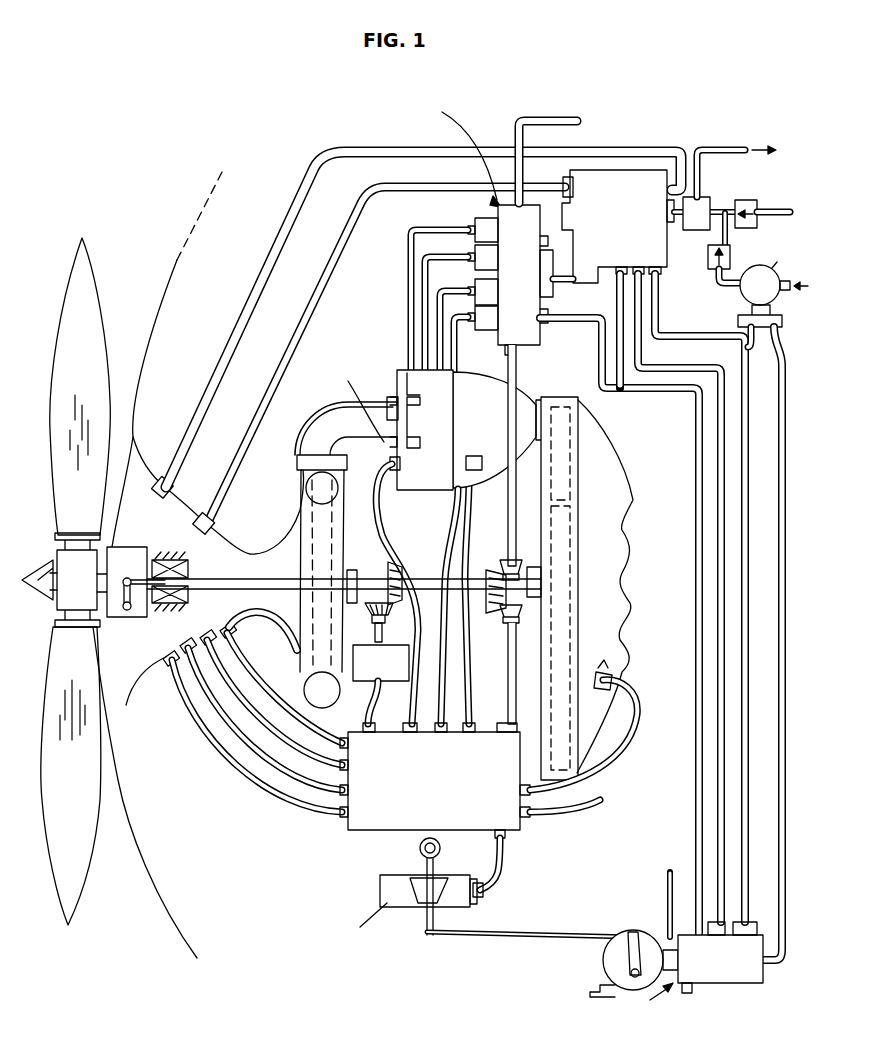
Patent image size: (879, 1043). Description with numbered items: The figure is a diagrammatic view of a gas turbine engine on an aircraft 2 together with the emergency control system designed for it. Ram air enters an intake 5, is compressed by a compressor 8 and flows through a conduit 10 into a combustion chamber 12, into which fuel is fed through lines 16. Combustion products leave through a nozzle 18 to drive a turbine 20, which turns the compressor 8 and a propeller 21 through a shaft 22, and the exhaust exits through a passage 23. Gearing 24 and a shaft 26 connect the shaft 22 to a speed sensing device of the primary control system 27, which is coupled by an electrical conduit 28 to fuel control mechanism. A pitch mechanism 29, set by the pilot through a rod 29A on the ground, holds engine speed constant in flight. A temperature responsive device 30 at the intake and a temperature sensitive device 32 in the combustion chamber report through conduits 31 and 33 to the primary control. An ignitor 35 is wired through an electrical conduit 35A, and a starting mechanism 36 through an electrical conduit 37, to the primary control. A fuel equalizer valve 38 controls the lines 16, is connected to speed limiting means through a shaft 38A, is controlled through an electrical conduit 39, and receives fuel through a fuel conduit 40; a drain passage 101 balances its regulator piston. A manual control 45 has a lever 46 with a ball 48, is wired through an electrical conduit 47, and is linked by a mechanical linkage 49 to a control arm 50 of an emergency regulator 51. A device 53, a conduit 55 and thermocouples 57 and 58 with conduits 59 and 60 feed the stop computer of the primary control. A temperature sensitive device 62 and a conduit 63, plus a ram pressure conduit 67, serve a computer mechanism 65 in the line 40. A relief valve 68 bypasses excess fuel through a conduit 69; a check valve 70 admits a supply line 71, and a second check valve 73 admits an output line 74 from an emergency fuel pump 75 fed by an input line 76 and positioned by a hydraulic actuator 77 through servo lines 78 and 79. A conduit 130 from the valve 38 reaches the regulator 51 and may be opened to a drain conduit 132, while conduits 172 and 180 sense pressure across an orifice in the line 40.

The aircraft 2 is at (155, 838).
The intake 5 is at (137, 497).
The blower or compressor 8 is at (300, 508).
The conduit 10 is at (318, 417).
The combustion chamber 12 is at (467, 377).
The fuel lines 16 is at (452, 318).
The nozzle 18 is at (548, 397).
The turbine 20 is at (566, 447).
The propeller 21 is at (95, 302).
The shaft 22 is at (233, 580).
The passage 23 is at (610, 477).
The gearing 24 is at (496, 613).
The shaft 26 is at (509, 660).
The primary control system 27 is at (447, 826).
The electrical conduit 28 is at (562, 818).
The pitch varying mechanism 29 is at (130, 550).
The rod 29A is at (174, 569).
The temperature responsive device 30 is at (170, 657).
The conduit 31 is at (207, 757).
The temperature sensitive device 32 is at (479, 456).
The conduit 33 is at (447, 535).
The ignitor 35 is at (390, 453).
The electrical conduit 35A is at (404, 531).
The starting mechanism 36 is at (389, 679).
The electrical conduit 37 is at (369, 715).
The fuel equalizer valve 38 is at (528, 276).
The shaft 38A is at (513, 533).
The electrical conduit 39 is at (552, 362).
The fuel conduit 40 is at (563, 281).
The manually operable control 45 is at (372, 888).
The control lever 46 is at (424, 866).
The electrical conduit 47 is at (513, 867).
The ball 48 is at (441, 849).
The mechanical linkage 49 is at (515, 938).
The control arm 50 is at (628, 957).
The regulator 51 is at (733, 971).
The device 53 is at (187, 644).
The conduit 55 is at (208, 635).
The thermocouple 57 is at (232, 628).
The thermocouple 58 is at (578, 686).
The conduit 59 is at (237, 663).
The conduit 60 is at (620, 768).
The temperature sensitive device 62 is at (209, 532).
The conduit 63 is at (308, 310).
The computer mechanism 65 is at (630, 266).
The conduit 67 is at (253, 291).
The fuel relief valve 68 is at (706, 225).
The conduit 69 is at (715, 157).
The check valve 70 is at (747, 200).
The fuel supply line 71 is at (771, 209).
The second check valve 73 is at (708, 258).
The second fuel supply output line 74 is at (722, 285).
The emergency fuel pump 75 is at (770, 295).
The fuel input line 76 is at (783, 280).
The hydraulic actuator 77 is at (780, 322).
The line 78 is at (656, 300).
The line 79 is at (743, 598).
The passage 101 is at (532, 118).
The conduit 130 is at (720, 558).
The drain conduit 132 is at (667, 890).
The conduit 172 is at (780, 648).
The conduit 180 is at (697, 523).